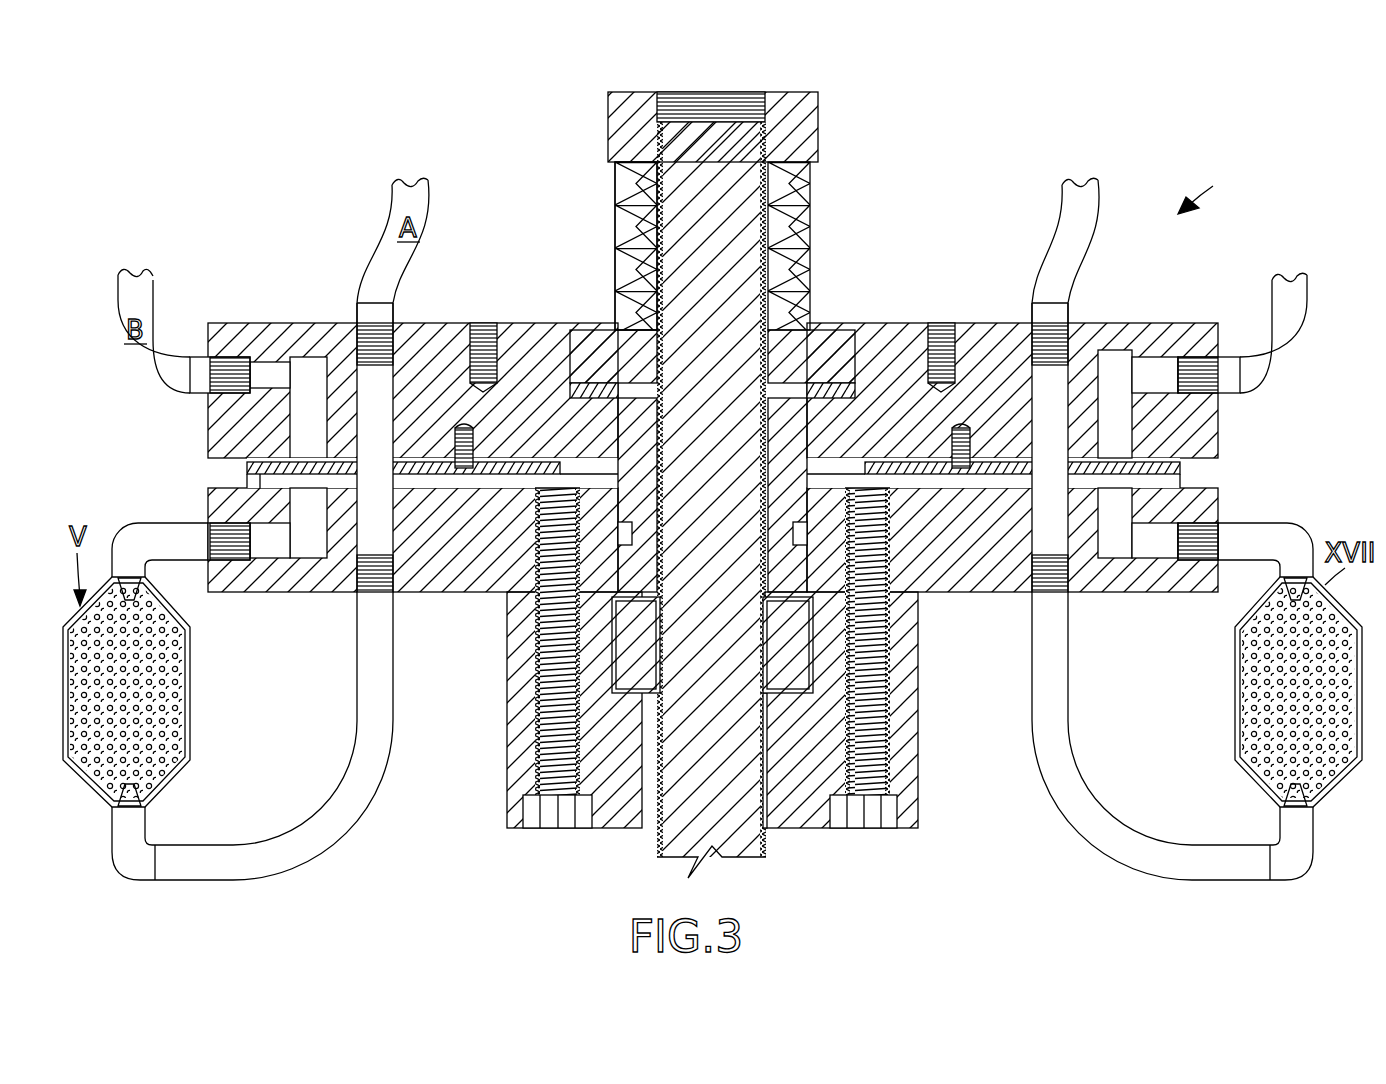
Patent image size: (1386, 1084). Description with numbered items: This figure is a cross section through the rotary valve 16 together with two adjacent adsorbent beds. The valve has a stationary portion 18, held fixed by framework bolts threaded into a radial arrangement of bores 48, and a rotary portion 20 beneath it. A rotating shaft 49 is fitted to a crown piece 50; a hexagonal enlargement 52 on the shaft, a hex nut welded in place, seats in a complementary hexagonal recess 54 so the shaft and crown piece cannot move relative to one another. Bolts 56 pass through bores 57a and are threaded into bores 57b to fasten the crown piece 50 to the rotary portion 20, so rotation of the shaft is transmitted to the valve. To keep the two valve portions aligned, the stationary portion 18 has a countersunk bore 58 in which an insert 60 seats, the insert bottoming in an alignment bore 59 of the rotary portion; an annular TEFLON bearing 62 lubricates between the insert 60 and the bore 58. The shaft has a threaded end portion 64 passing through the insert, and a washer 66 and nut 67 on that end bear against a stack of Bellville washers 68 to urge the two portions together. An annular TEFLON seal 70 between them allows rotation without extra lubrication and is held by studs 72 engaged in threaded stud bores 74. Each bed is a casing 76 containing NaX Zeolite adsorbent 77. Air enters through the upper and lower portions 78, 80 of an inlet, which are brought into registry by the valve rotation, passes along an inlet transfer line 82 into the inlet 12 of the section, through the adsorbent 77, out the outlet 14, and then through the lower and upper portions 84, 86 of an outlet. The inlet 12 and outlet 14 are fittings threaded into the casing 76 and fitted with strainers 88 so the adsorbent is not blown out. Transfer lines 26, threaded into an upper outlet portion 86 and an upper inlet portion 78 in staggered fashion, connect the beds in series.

The inlet 12 is at (130, 858).
The outlet 14 is at (162, 523).
The rotary valve 16 is at (1206, 186).
The stationary portion 18 is at (1222, 395).
The rotary portion 20 is at (990, 598).
The transfer lines 26 is at (395, 200).
The bores 48 is at (488, 325).
The rotating shaft 49 is at (672, 860).
The crown piece 50 is at (512, 830).
The hexagonal enlargement 52 is at (776, 700).
The hexagonal recess 54 is at (820, 700).
The bolts 56 is at (560, 815).
The bores 57a is at (548, 760).
The bores 57b is at (545, 600).
The countersunk bore 58 is at (850, 330).
The alignment bore 59 is at (800, 660).
The insert 60 is at (815, 335).
The TEFLON bearing 62 is at (592, 340).
The threaded end portion 64 is at (730, 212).
The washer 66 is at (615, 175).
The nut 67 is at (805, 131).
The Bellville washers 68 is at (615, 212).
The seal 70 is at (305, 355).
The studs 72 is at (396, 335).
The threaded stud bores 74 is at (462, 428).
The casing 76 is at (190, 680).
The NaX Zeolite adsorbent 77 is at (160, 705).
The upper portion of inlet 78 is at (355, 335).
The lower portion of inlet 80 is at (398, 560).
The inlet transfer line 82 is at (330, 830).
The lower portion of outlet 84 is at (322, 560).
The upper portion of outlet 86 is at (240, 352).
The strainers 88 is at (165, 585).